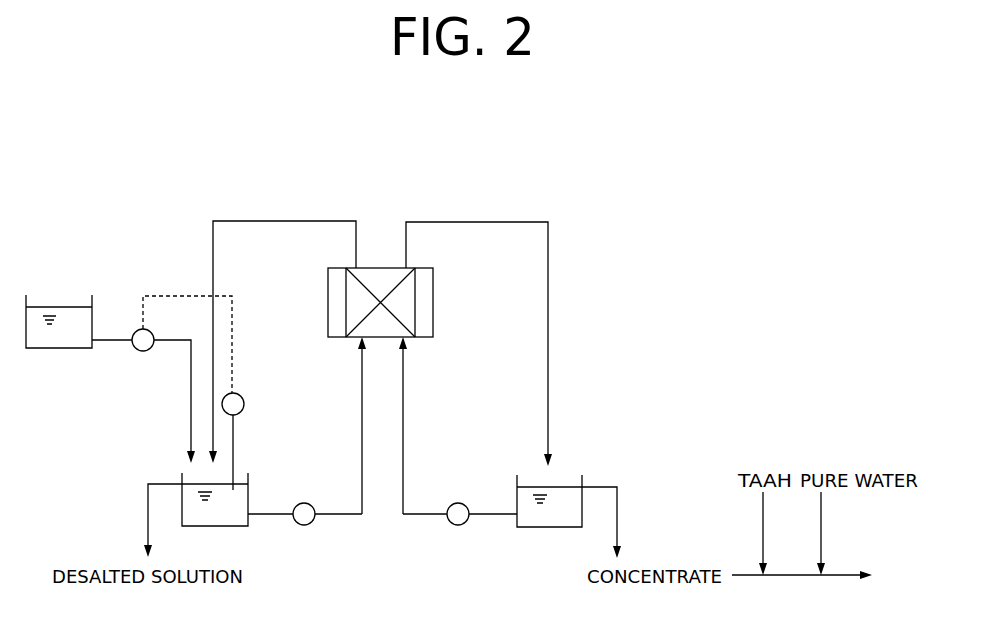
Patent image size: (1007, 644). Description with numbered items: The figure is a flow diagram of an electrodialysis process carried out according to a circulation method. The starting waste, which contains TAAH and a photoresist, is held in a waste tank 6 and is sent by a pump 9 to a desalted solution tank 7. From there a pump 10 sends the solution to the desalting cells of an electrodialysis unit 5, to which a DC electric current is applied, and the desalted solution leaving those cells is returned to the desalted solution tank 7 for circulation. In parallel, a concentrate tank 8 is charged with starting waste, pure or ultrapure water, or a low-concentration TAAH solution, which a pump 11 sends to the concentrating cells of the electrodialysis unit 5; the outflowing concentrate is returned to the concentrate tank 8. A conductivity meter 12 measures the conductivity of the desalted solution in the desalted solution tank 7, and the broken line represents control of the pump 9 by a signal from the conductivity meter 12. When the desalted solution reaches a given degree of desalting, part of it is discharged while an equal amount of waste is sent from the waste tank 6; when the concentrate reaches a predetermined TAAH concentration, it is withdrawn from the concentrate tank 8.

The electrodialysis unit 5 is at (433, 307).
The waste tank 6 is at (52, 348).
The desalted solution tank 7 is at (251, 484).
The concentrate tank 8 is at (567, 527).
The pump 9 is at (143, 352).
The pump 10 is at (308, 525).
The pump 11 is at (461, 526).
The conductivity meter 12 is at (244, 398).